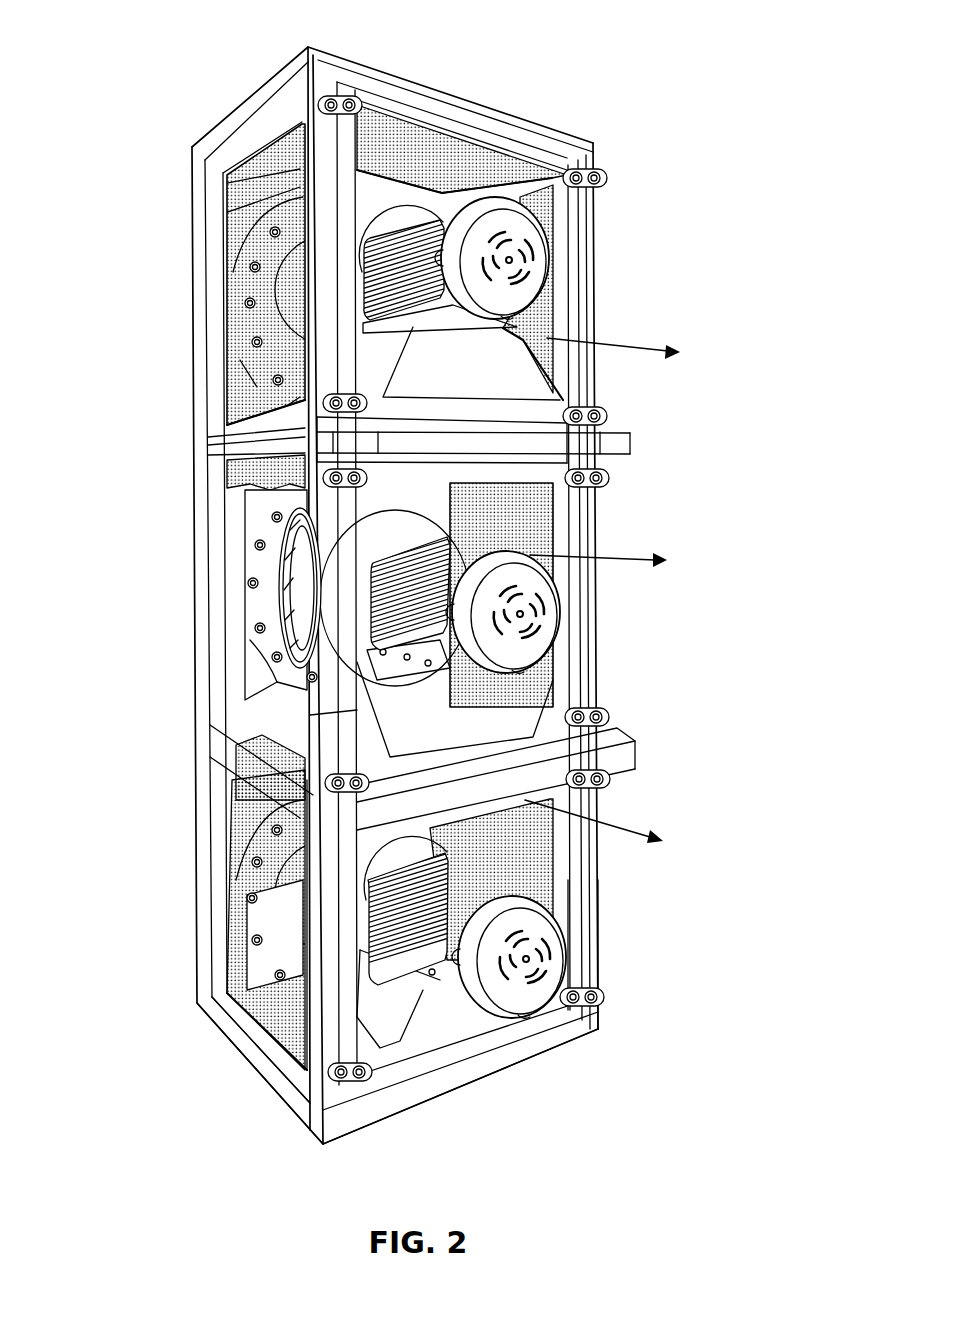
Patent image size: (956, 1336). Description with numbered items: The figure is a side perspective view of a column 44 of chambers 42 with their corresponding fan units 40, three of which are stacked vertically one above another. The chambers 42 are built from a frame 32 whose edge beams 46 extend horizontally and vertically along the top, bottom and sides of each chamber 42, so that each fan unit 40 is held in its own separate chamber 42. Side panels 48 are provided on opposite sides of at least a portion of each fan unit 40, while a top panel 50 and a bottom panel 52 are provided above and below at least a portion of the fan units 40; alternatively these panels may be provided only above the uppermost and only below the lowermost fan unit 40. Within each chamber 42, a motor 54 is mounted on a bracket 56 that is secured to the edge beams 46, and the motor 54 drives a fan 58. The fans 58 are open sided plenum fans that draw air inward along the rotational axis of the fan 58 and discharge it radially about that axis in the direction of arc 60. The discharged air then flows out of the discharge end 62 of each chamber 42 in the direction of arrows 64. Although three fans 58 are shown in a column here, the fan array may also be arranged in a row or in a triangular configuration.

The frame 32 is at (614, 938).
The fan unit 40 is at (545, 248).
The chamber 42 is at (246, 216).
The column 44 is at (256, 28).
The edge beam 46 is at (595, 893).
The side panel 48 is at (545, 505).
The top panel 50 is at (445, 163).
The bottom panel 52 is at (252, 1068).
The motor 54 is at (542, 267).
The bracket 56 is at (525, 695).
The fan 58 is at (307, 598).
The arc 60 is at (275, 610).
The discharge end 62 is at (572, 201).
The arrows 64 is at (630, 352).